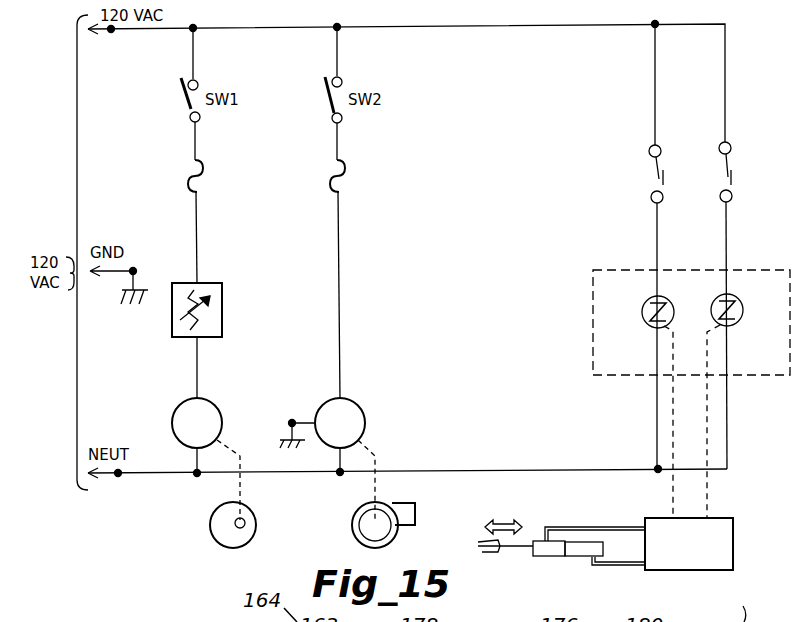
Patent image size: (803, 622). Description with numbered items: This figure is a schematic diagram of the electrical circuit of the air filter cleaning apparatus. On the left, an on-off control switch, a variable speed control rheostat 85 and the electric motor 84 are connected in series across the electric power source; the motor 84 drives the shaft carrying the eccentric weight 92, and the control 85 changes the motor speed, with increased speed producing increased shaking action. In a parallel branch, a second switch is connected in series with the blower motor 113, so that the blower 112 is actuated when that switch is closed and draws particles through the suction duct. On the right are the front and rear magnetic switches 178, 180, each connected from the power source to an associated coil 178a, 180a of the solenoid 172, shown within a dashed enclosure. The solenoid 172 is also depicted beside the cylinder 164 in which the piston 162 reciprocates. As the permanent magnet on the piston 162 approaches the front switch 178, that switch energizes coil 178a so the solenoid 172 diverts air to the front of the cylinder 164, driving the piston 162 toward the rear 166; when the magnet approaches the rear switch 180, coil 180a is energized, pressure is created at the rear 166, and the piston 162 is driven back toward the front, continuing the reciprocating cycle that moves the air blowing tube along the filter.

The variable speed control rheostat 85 is at (210, 283).
The electric motor 84 is at (219, 400).
The blower motor 113 is at (362, 412).
The eccentric weight 92 is at (210, 526).
The blower 112 is at (382, 528).
The front magnetic switch 178 is at (652, 188).
The rear magnetic switch 180 is at (722, 190).
The solenoid 172 is at (593, 283).
The coil 178a is at (643, 320).
The coil 180a is at (737, 322).
The piston 162 is at (563, 556).
The cylinder 164 is at (583, 556).
The rear of cylinder 166 is at (724, 608).